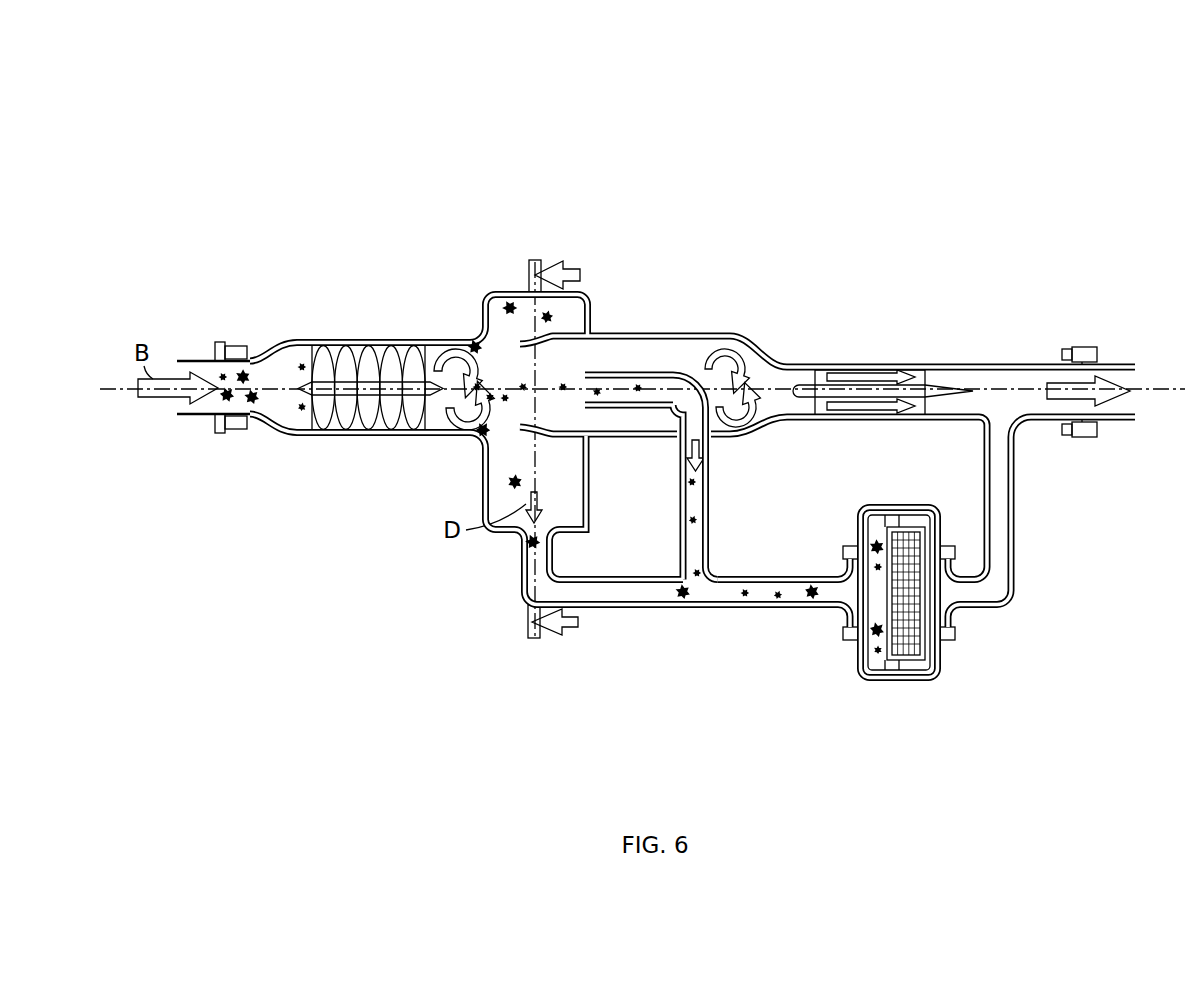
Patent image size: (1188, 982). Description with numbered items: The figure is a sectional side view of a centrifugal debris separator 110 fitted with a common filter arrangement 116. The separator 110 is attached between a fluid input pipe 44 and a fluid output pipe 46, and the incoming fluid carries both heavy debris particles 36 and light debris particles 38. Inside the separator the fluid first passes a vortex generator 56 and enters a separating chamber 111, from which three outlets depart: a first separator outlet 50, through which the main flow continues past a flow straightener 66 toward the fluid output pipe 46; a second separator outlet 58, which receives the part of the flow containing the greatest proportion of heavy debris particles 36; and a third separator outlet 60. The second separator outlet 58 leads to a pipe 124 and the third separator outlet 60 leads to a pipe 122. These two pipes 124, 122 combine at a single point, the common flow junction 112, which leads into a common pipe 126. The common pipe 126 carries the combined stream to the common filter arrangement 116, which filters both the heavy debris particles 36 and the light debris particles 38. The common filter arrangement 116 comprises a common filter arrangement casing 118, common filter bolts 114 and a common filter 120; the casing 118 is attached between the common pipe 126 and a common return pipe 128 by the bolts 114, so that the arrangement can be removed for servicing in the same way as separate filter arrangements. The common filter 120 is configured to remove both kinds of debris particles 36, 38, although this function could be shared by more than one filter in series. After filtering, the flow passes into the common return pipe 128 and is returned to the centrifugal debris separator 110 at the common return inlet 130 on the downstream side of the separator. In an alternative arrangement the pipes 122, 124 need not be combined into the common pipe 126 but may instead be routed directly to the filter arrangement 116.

The centrifugal debris separator 110 is at (432, 223).
The separating chamber 111 is at (642, 163).
The fluid input pipe 44 is at (195, 359).
The heavy debris particles 36 is at (253, 406).
The light debris particles 38 is at (303, 361).
The vortex generator 56 is at (358, 426).
The second separator outlet 58 is at (500, 497).
The third separator outlet 60 is at (627, 373).
The first separator outlet 50 is at (763, 369).
The flow straightener 66 is at (822, 373).
The fluid output pipe 46 is at (1128, 366).
The common return inlet 130 is at (1010, 417).
The common return pipe 128 is at (1012, 497).
The pipe 122 is at (708, 507).
The common pipe 126 is at (768, 575).
The pipe 124 is at (628, 606).
The common flow junction 112 is at (708, 594).
The common filter arrangement 116 is at (913, 748).
The common filter bolts 114 is at (846, 636).
The common filter arrangement casing 118 is at (935, 675).
The common filter 120 is at (918, 613).